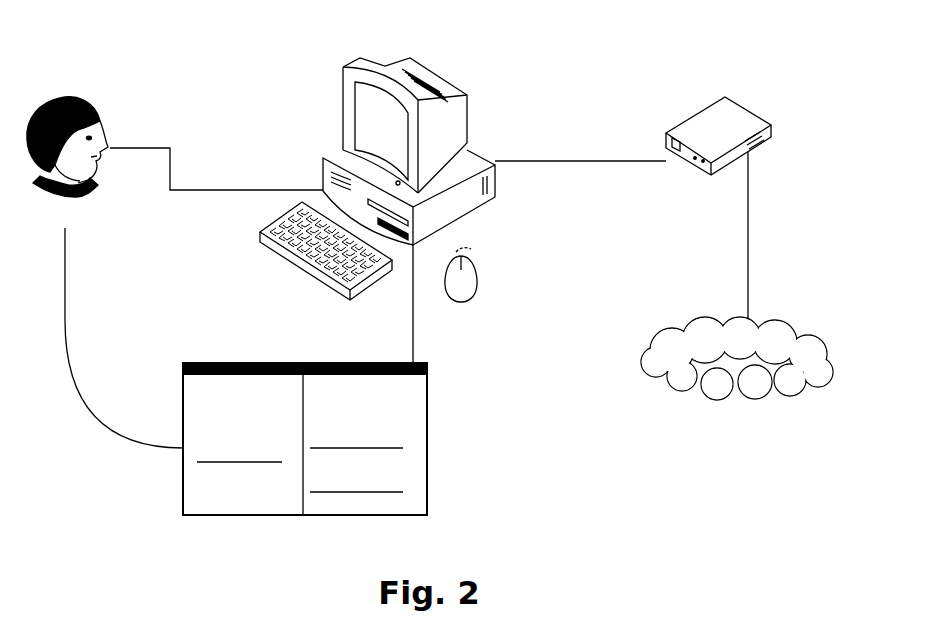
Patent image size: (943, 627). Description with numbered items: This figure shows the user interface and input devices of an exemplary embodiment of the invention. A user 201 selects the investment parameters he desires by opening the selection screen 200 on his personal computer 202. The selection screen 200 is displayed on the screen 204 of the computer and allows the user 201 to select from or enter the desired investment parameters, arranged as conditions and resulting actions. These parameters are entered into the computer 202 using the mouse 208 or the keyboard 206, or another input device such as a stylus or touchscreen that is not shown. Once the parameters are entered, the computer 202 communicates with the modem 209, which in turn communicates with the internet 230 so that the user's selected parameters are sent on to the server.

The selection screen 200 is at (305, 456).
The user 201 is at (65, 197).
The personal computer 202 is at (330, 183).
The screen 204 is at (368, 120).
The keyboard 206 is at (315, 243).
The mouse 208 is at (465, 278).
The modem 209 is at (718, 151).
The internet 230 is at (737, 374).